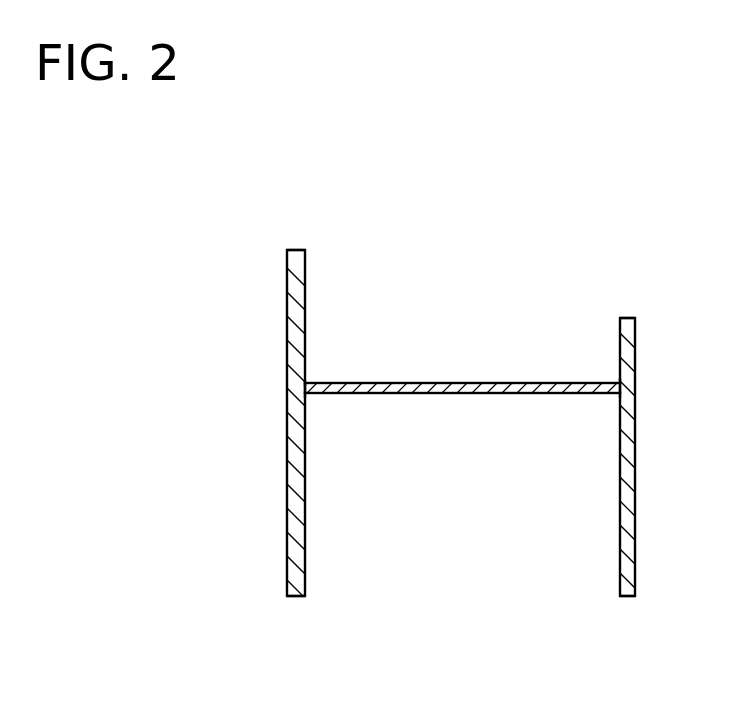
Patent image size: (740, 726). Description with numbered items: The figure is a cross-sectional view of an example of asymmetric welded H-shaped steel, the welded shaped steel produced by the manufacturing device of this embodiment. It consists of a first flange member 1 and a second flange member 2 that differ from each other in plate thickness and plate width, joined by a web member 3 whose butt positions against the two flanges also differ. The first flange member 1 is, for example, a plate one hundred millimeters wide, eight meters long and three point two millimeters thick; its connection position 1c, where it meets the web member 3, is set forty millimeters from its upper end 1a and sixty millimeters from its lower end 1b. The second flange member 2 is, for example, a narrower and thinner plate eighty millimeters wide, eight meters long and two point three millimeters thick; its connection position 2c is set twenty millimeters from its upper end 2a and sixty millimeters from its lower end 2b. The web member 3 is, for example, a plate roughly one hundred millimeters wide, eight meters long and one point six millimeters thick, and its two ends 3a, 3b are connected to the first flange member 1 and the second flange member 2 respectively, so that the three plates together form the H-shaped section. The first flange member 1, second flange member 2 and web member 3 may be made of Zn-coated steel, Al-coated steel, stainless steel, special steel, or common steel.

The first flange member 1 is at (293, 311).
The upper end 1a is at (296, 250).
The lower end 1b is at (297, 597).
The connection position 1c is at (306, 396).
The second flange member 2 is at (633, 445).
The upper end 2a is at (627, 318).
The lower end 2b is at (628, 597).
The connection position 2c is at (618, 383).
The web member 3 is at (447, 394).
The end of web member 3a is at (306, 385).
The end of web member 3b is at (618, 395).